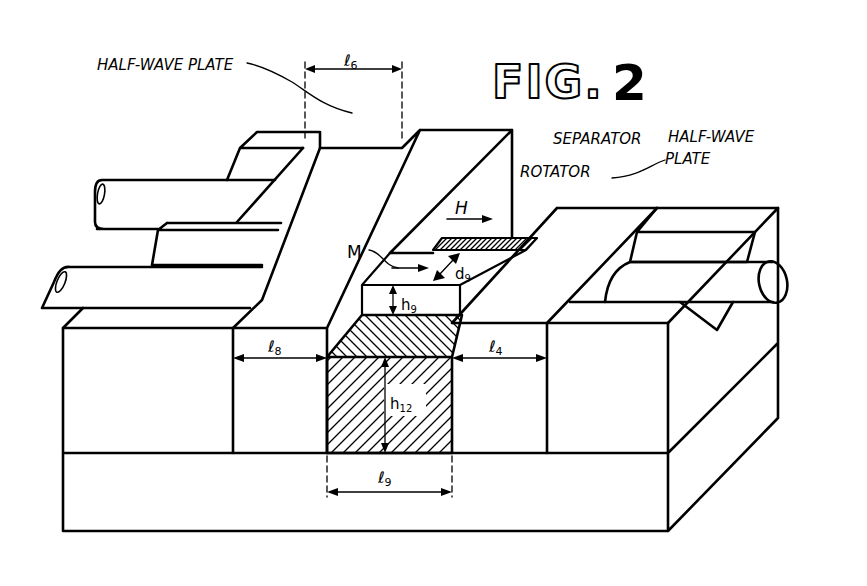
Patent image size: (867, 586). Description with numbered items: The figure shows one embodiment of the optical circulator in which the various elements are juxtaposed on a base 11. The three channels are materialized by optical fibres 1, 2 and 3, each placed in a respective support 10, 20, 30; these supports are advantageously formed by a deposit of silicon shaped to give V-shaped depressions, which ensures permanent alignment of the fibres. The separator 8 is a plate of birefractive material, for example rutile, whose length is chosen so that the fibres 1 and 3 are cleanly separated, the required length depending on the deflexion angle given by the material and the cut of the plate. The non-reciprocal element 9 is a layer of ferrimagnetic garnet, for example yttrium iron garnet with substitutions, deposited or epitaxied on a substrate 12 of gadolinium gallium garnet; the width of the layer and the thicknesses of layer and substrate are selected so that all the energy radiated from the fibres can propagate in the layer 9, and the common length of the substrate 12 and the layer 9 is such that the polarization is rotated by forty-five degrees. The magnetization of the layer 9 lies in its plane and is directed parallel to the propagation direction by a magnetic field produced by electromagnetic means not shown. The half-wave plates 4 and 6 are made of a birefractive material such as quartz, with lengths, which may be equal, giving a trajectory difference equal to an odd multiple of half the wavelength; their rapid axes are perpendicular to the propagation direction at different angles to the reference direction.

The channel 1 is at (74, 273).
The channel 2 is at (733, 297).
The channel 3 is at (147, 190).
The half-wave plate 4 is at (600, 210).
The half-wave plate 6 is at (354, 160).
The separator 8 is at (500, 162).
The non-reciprocal element 9 is at (507, 237).
The support 10 is at (68, 354).
The base 11 is at (654, 524).
The substrate 12 is at (335, 440).
The support 20 is at (683, 215).
The support 30 is at (272, 137).